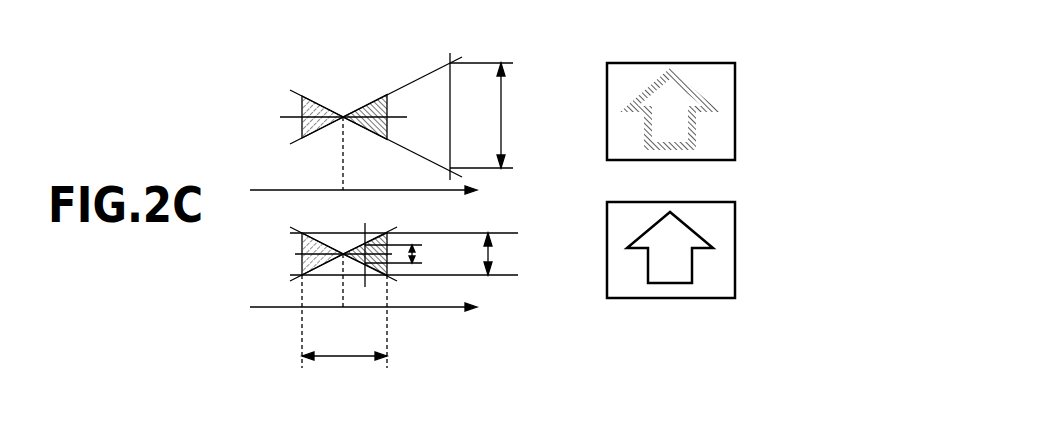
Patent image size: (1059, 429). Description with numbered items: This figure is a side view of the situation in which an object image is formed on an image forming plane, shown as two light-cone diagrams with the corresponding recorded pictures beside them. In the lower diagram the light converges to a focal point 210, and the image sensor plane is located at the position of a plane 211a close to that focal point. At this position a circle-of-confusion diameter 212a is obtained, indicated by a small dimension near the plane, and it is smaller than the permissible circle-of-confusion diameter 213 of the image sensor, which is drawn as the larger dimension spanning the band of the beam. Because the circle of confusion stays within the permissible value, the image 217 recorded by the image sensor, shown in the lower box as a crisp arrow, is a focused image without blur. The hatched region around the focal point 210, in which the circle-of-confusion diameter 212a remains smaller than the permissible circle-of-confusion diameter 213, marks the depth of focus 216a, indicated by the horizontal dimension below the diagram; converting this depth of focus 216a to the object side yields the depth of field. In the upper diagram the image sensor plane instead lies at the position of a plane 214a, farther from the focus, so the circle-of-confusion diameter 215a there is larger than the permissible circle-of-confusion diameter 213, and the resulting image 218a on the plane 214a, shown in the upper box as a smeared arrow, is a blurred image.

The focal point 210 is at (343, 253).
The plane 211a is at (369, 226).
The circle-of-confusion diameter 212a is at (418, 254).
The permissible circle-of-confusion diameter 213 is at (493, 253).
The plane 214a is at (450, 62).
The circle-of-confusion diameter 215a is at (502, 118).
The depth of focus 216a is at (343, 357).
The image 217 is at (700, 230).
The image 218a is at (702, 84).